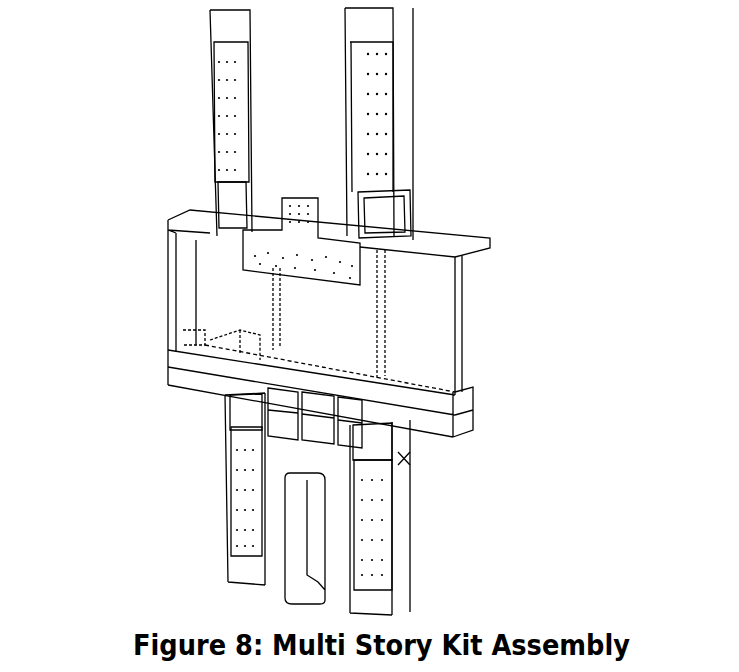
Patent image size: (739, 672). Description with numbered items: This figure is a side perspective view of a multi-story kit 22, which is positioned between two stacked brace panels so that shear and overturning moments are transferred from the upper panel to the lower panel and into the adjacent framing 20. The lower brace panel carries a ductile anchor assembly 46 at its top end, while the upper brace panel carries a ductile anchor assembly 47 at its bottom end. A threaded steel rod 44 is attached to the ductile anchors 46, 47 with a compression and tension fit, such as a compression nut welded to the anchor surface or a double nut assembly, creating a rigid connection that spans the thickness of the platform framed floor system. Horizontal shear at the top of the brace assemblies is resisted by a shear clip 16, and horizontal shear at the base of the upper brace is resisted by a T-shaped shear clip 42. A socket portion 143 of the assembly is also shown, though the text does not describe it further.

The ductile anchor assembly 47 is at (207, 173).
The post socket connector 143 is at (402, 222).
The "T"-shaped shear clip 42 is at (293, 242).
The steel rod 44 is at (377, 317).
The multi-story kit 22 is at (432, 293).
The adjacent framing 20 is at (334, 317).
The ductile anchor assembly 46 is at (345, 505).
The shear clip 16 is at (408, 455).